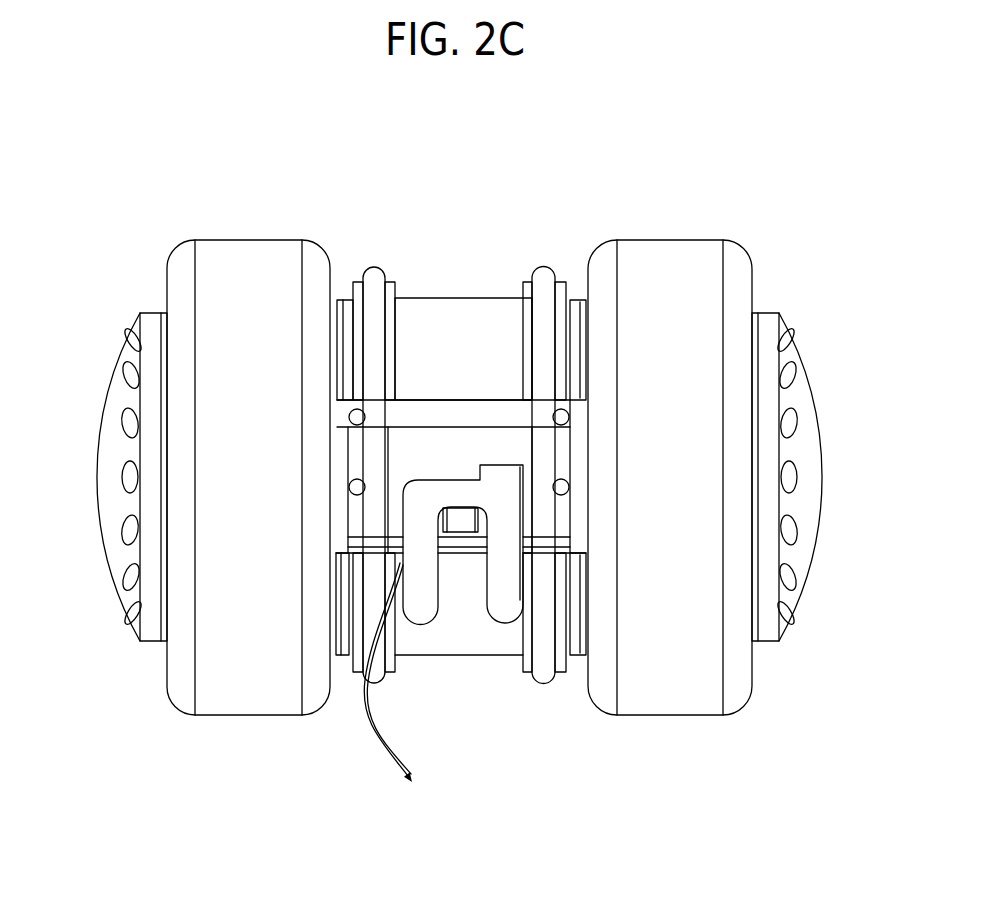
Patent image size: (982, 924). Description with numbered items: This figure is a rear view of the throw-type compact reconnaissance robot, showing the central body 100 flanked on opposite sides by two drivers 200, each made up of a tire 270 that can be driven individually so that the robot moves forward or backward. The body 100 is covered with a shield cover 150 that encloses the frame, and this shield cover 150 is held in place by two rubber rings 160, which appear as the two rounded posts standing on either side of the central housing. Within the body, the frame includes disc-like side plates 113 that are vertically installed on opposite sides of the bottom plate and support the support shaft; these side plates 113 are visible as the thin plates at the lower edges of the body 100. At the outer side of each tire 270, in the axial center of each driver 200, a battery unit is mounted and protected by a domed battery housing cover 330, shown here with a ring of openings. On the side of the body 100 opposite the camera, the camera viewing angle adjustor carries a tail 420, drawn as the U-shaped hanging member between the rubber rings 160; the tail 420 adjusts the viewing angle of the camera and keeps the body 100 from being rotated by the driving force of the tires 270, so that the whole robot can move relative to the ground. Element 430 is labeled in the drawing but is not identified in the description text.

The body 100 is at (470, 470).
The side plate 113 is at (341, 645).
The shield cover 150 is at (421, 280).
The rubber ring 160 is at (370, 252).
The driver 200 is at (452, 416).
The tire 270 is at (230, 232).
The battery housing cover 330 is at (110, 354).
The tail 420 is at (500, 642).
The tongue 430 is at (448, 452).